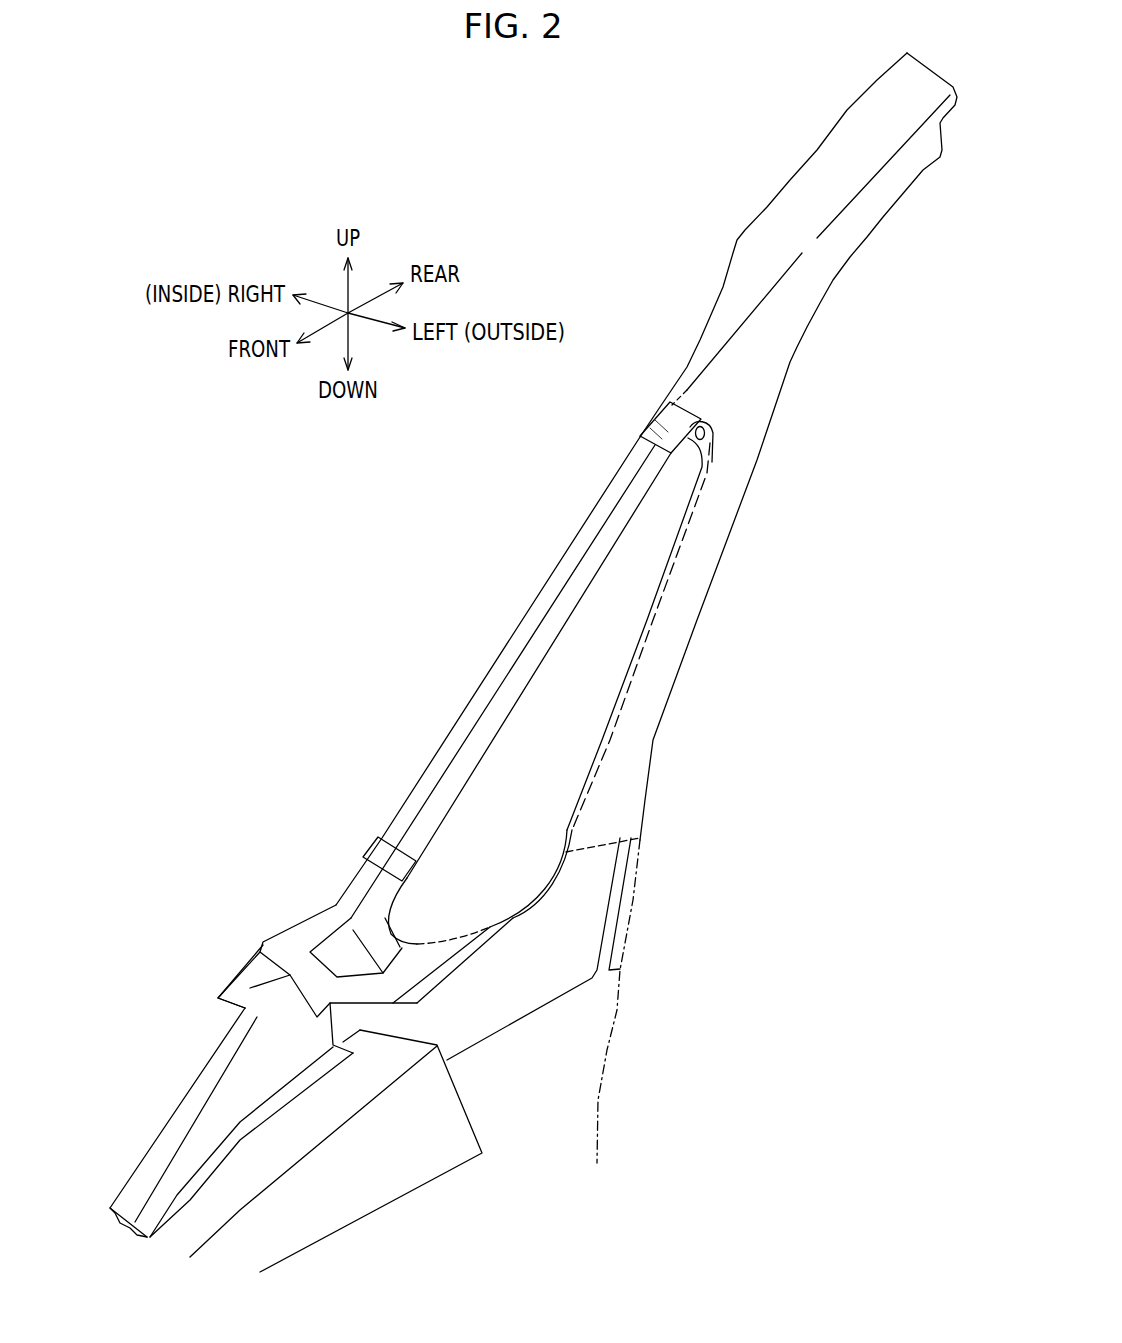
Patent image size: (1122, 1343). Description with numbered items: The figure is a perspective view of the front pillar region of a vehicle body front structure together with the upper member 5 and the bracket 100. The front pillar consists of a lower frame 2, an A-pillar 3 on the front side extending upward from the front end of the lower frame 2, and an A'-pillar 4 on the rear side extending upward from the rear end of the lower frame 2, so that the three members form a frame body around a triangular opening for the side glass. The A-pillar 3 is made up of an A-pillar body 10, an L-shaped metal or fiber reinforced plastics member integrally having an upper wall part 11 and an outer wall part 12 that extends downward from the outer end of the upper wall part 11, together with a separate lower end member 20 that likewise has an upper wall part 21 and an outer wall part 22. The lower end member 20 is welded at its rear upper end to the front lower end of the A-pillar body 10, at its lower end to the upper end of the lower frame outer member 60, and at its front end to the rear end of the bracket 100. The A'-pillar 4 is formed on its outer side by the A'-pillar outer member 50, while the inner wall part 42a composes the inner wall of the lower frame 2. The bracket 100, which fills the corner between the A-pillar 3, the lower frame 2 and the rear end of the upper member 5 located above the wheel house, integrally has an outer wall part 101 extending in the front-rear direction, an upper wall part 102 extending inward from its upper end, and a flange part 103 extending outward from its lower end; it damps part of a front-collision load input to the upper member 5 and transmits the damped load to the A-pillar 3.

The lower frame 2 is at (482, 887).
The A-pillar 3 is at (410, 700).
The A'-pillar 4 is at (722, 632).
The upper member 5 is at (398, 1158).
The A-pillar body 10 is at (518, 660).
The upper wall part 11 is at (512, 650).
The outer wall part 12 is at (572, 592).
The lower end member 20 is at (317, 913).
The upper wall part 21 is at (350, 898).
The outer wall part 22 is at (392, 885).
The inner wall part 42a is at (540, 948).
The A'-pillar outer member 50 is at (728, 467).
The lower frame outer member 60 is at (618, 1008).
The bracket 100 is at (198, 1094).
The outer wall part 101 is at (233, 1093).
The upper wall part 102 is at (247, 983).
The flange part 103 is at (190, 1180).